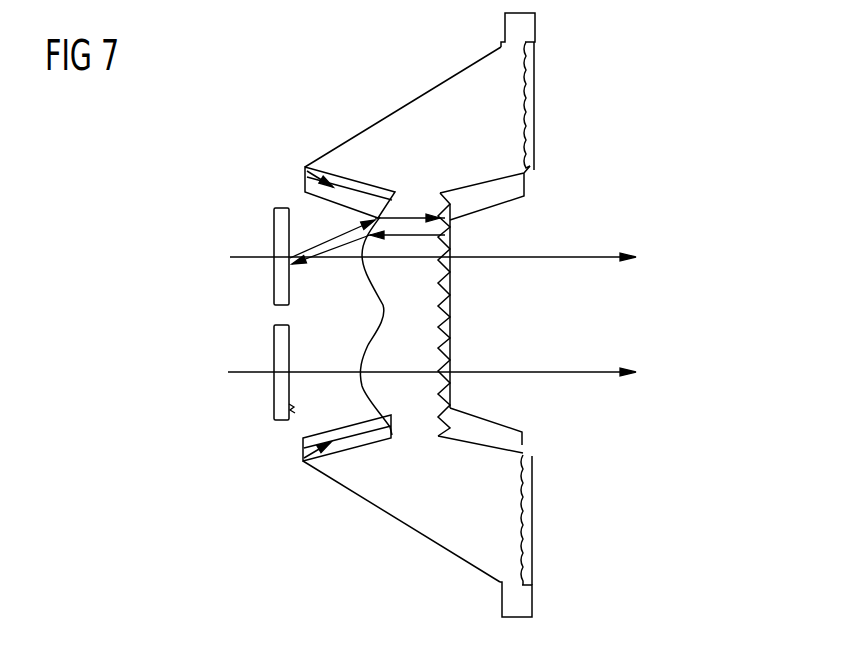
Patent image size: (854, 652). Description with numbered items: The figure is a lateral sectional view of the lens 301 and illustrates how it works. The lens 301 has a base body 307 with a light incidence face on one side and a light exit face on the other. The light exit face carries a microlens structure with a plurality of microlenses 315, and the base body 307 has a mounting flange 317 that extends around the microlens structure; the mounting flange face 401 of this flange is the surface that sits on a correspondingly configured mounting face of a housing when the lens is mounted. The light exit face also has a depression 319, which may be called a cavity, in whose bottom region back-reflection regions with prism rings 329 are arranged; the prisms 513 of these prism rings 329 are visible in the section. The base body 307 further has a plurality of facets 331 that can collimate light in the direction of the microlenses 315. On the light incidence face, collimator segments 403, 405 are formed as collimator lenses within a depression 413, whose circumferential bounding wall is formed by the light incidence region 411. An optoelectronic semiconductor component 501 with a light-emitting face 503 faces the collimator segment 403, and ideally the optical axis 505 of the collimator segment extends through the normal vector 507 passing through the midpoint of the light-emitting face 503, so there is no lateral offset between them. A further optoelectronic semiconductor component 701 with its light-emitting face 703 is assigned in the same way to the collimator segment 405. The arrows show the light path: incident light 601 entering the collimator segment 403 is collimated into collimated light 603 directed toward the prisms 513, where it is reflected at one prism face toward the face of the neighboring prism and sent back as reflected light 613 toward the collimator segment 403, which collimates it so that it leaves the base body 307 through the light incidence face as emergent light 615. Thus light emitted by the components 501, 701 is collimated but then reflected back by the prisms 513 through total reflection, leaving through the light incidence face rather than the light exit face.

The lens 301 is at (678, 86).
The base body 307 is at (507, 553).
The microlenses 315 is at (533, 88).
The mounting flange 317 is at (535, 13).
The depression 319 is at (518, 307).
The prism rings 329 is at (474, 326).
The facets 331 is at (375, 138).
The mounting flange face 401 is at (490, 25).
The collimator segment 403 is at (368, 298).
The collimator segment 405 is at (362, 387).
The light incidence region 411 is at (306, 166).
The depression 413 is at (299, 313).
The optoelectronic semiconductor component 501 is at (283, 222).
The light-emitting face 503 is at (293, 219).
The optical axis 505 is at (563, 254).
The normal vector 507 is at (605, 254).
The prisms 513 is at (452, 230).
The incident light 601 is at (325, 240).
The collimated light 603 is at (414, 215).
The reflected light 613 is at (410, 240).
The emergent light 615 is at (342, 255).
The further optoelectronic semiconductor component 701 is at (277, 398).
The light-emitting face 703 is at (297, 412).